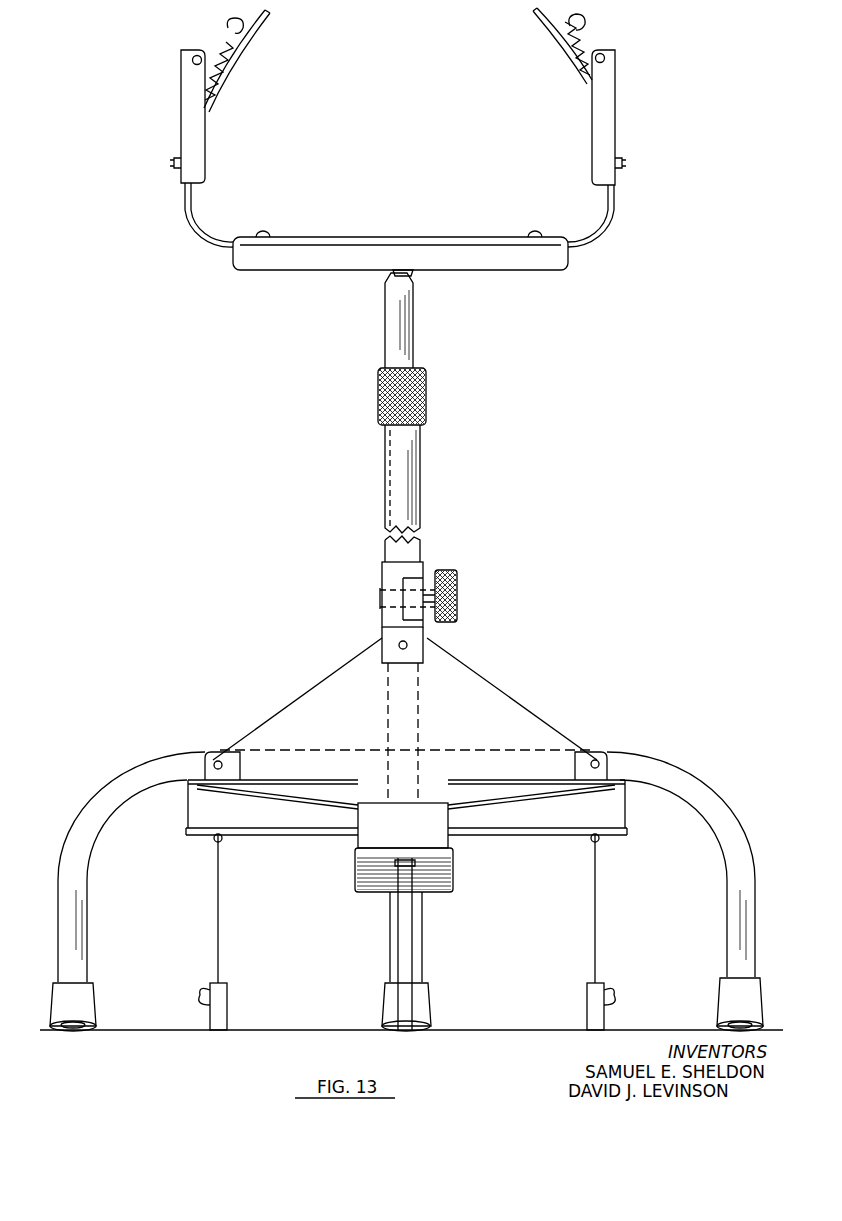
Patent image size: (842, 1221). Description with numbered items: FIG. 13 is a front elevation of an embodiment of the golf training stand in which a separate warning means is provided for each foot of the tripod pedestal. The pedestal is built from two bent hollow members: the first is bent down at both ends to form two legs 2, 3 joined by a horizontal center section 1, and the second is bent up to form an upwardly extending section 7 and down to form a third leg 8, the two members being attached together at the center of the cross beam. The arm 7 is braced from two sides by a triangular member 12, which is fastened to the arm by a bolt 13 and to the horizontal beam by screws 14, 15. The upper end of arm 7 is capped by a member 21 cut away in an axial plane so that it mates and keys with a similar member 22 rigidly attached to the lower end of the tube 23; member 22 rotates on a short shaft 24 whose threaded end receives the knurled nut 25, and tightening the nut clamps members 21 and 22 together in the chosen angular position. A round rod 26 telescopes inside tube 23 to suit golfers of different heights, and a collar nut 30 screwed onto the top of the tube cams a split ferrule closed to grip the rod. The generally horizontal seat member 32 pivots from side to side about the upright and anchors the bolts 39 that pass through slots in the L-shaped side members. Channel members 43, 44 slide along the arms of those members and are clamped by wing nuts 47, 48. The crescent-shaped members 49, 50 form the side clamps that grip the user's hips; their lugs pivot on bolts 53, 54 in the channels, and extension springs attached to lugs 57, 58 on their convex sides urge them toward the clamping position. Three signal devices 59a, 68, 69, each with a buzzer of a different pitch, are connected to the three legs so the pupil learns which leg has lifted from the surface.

The horizontal center section 1 is at (406, 867).
The leg 2 is at (80, 925).
The leg 3 is at (728, 880).
The upwardly extending section 7 is at (418, 716).
The third leg 8 is at (412, 967).
The triangular member 12 is at (520, 714).
The bolt 13 is at (400, 642).
The screw 14 is at (214, 760).
The screw 15 is at (594, 760).
The cap member 21 is at (420, 632).
The mating member 22 is at (382, 572).
The tube 23 is at (410, 510).
The short shaft 24 is at (380, 595).
The knurled nut 25 is at (456, 582).
The round rod 26 is at (405, 338).
The collar nut 30 is at (426, 387).
The seat member 32 is at (508, 264).
The bolt 39 is at (262, 237).
The channel member 43 is at (605, 121).
The channel member 44 is at (198, 137).
The wing nut 47 is at (620, 166).
The wing nut 48 is at (176, 162).
The crescent-shaped member 49 is at (540, 20).
The crescent-shaped member 50 is at (262, 35).
The pivot bolt 53 is at (606, 55).
The pivot bolt 54 is at (192, 60).
The lug 57 is at (585, 20).
The lug 58 is at (228, 24).
The signal device 59a is at (445, 836).
The signal device 68 is at (245, 815).
The signal device 69 is at (520, 822).